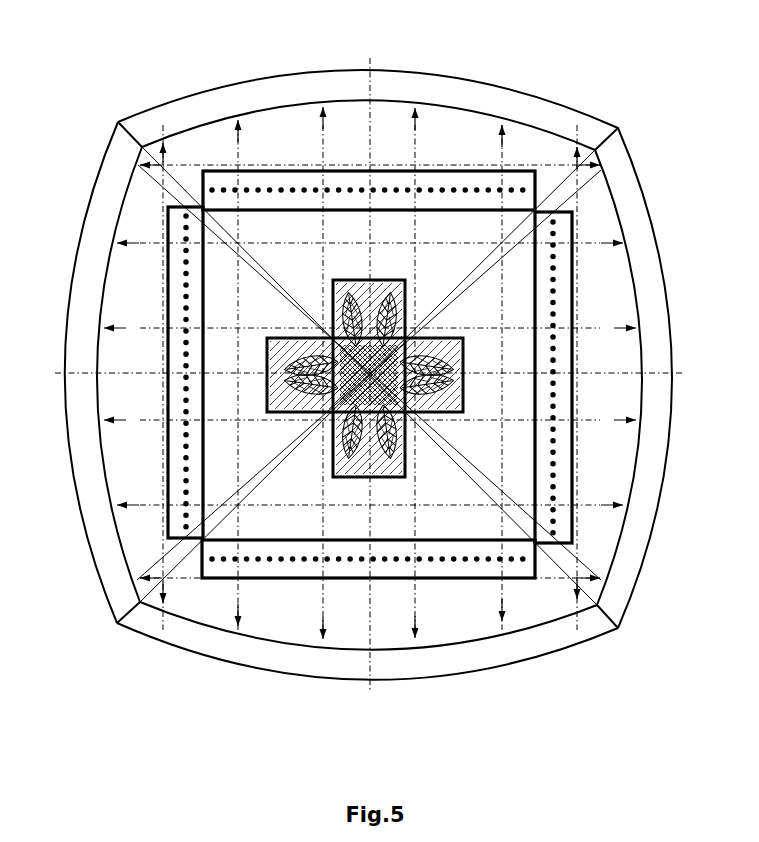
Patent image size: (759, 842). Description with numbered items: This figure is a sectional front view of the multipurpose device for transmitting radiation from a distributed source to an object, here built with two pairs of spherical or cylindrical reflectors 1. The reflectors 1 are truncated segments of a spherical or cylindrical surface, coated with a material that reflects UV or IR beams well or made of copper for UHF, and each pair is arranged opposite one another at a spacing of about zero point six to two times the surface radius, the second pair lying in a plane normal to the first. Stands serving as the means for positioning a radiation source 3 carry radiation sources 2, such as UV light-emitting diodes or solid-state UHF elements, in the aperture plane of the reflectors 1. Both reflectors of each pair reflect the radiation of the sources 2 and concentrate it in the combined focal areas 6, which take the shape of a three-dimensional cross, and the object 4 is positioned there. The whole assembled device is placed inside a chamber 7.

The reflectors 1 is at (352, 85).
The radiation sources 2 is at (460, 192).
The means for positioning a radiation source 3 is at (473, 172).
The object 4 is at (413, 302).
The focal areas 6 is at (350, 457).
The chamber 7 is at (287, 623).